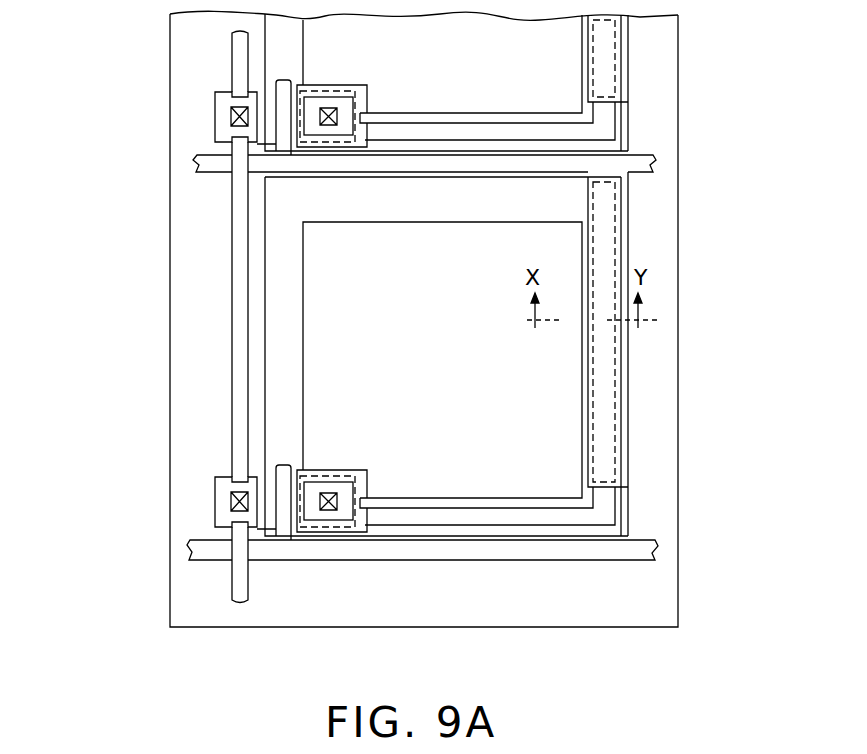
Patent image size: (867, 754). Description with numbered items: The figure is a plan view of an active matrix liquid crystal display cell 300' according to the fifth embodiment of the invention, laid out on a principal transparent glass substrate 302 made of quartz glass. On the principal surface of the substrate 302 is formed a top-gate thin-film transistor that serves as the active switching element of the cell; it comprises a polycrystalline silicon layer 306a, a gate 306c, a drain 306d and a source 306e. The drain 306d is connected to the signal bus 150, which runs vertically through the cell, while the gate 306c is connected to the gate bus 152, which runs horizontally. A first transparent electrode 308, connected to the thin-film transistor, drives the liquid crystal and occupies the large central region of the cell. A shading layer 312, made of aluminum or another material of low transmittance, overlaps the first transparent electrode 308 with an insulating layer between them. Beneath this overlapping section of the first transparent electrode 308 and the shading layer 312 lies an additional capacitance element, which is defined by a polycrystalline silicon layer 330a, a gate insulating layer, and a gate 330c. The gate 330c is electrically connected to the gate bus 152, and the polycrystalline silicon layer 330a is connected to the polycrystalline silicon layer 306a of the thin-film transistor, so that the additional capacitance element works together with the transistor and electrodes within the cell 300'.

The signal bus 150 is at (232, 47).
The gate bus 152 is at (655, 160).
The active matrix liquid crystal display cell 300' is at (761, 266).
The principal transparent glass substrate 302 is at (678, 308).
The polycrystalline silicon layer 306a is at (255, 530).
The gate 306c is at (276, 470).
The drain 306d is at (215, 503).
The source 306e is at (352, 532).
The first transparent electrode 308 is at (265, 366).
The shading layer 312 is at (588, 360).
The polycrystalline silicon layer 330a is at (612, 496).
The gate 330c is at (621, 240).